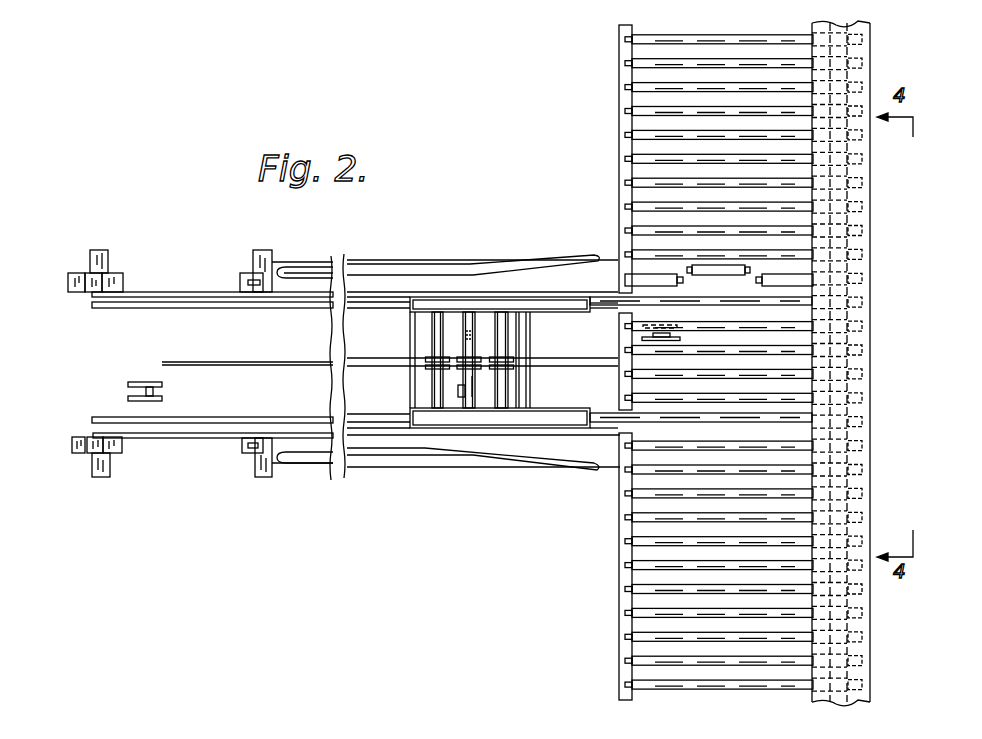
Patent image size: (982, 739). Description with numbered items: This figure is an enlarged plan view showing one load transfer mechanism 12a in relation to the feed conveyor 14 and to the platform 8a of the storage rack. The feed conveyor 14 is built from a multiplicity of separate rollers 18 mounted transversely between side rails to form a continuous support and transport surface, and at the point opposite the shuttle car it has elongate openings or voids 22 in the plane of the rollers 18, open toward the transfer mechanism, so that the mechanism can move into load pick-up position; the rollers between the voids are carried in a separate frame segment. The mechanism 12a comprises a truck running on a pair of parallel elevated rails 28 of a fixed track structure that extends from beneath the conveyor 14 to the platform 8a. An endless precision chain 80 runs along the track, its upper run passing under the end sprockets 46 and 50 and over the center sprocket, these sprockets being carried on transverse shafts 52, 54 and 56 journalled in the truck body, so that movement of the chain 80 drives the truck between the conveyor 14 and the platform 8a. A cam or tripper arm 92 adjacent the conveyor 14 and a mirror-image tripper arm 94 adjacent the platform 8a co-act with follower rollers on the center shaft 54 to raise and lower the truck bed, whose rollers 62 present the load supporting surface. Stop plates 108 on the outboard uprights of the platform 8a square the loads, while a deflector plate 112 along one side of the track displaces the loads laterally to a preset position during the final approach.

The feed conveyor 14 is at (604, 592).
The rollers 18 is at (640, 113).
The elongate openings or voids 22 is at (618, 313).
The cam or tripper arm 92 is at (629, 336).
The elevated rails 28 is at (127, 310).
The stop plates 108 is at (70, 274).
The platform 8a is at (122, 273).
The cam or tripper arm 94 is at (140, 367).
The endless precision chain 80 is at (270, 363).
The load transfer mechanism 12a is at (350, 483).
The deflector plate 112 is at (403, 237).
The roller 62 is at (467, 297).
The transverse shaft 52 is at (443, 320).
The sprocket 46 is at (437, 357).
The transverse shaft 54 is at (473, 380).
The transverse shaft 56 is at (503, 316).
The sprocket 50 is at (509, 356).